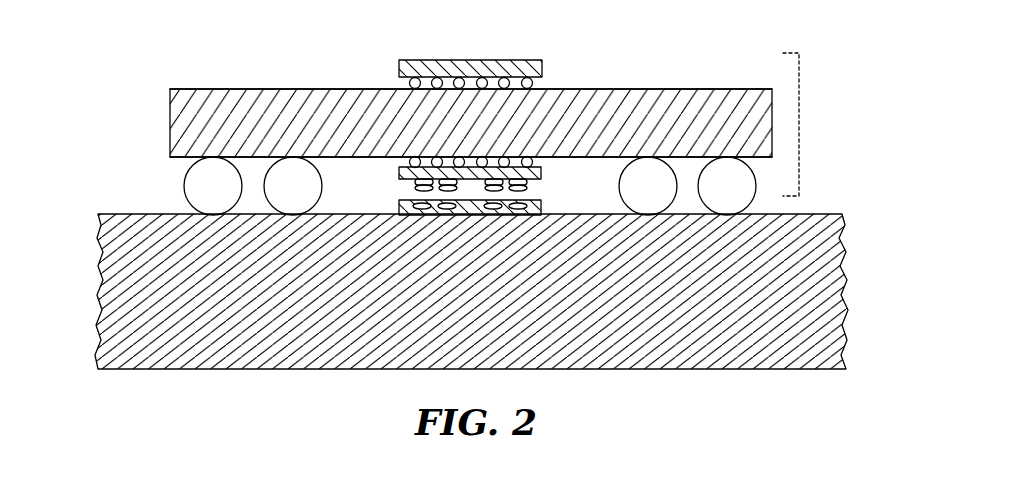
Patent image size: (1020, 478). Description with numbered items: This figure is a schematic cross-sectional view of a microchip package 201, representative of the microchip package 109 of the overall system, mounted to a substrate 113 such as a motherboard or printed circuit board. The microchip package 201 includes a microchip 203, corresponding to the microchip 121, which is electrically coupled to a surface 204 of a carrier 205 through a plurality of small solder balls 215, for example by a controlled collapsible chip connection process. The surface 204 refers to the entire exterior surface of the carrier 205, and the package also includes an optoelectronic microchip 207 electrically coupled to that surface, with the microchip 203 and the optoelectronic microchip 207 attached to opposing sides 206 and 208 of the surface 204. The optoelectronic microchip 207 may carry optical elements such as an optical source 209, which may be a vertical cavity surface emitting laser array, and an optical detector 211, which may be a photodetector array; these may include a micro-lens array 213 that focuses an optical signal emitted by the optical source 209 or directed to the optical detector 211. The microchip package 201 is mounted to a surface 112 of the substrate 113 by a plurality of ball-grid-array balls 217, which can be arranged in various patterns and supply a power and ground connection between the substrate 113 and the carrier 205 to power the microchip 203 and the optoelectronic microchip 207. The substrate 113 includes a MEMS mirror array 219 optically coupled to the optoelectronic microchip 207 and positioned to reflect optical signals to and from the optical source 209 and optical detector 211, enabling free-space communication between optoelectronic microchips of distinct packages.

The microchip package 109 is at (845, 124).
The microchip package 201 is at (800, 120).
The surface of the substrate 112 is at (457, 251).
The substrate 113 is at (97, 228).
The microchip 121 is at (527, 65).
The microchip 203 is at (542, 62).
The surface of the carrier 204 is at (432, 99).
The carrier 205 is at (740, 89).
The side of the surface of the carrier 206 is at (253, 80).
The optoelectronic microchip 207 is at (542, 172).
The side of the surface of the carrier 208 is at (347, 163).
The optical source 209 is at (415, 181).
The optical detector 211 is at (532, 188).
The micro-lens array 213 is at (415, 187).
The small solder balls 215 is at (404, 161).
The ball-grid-array balls 217 is at (757, 193).
The MEMS mirror array 219 is at (500, 208).